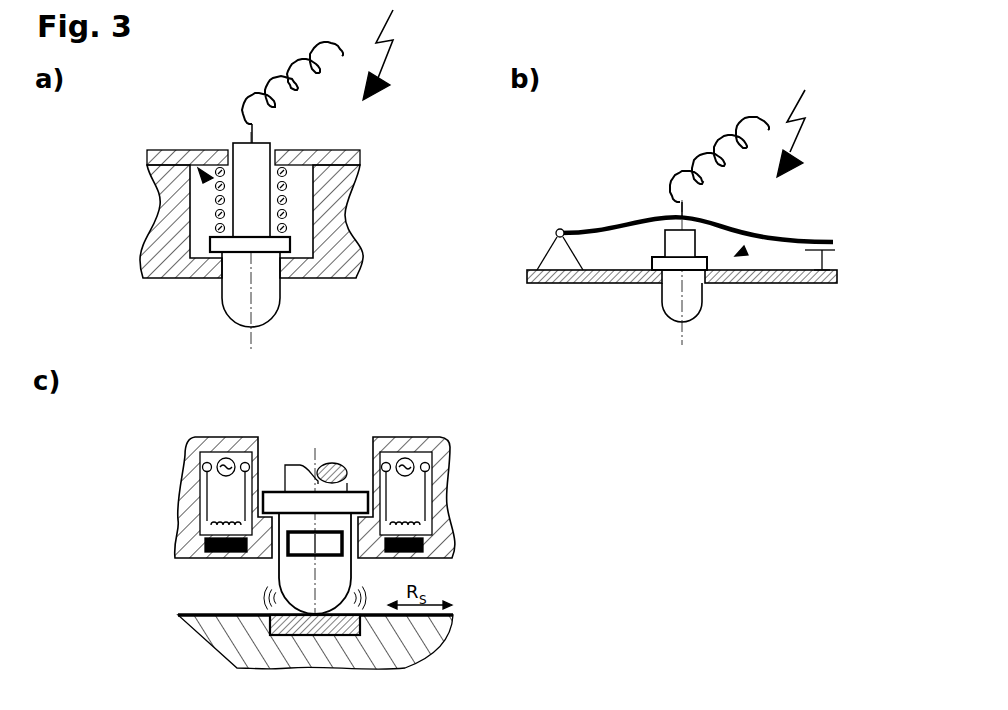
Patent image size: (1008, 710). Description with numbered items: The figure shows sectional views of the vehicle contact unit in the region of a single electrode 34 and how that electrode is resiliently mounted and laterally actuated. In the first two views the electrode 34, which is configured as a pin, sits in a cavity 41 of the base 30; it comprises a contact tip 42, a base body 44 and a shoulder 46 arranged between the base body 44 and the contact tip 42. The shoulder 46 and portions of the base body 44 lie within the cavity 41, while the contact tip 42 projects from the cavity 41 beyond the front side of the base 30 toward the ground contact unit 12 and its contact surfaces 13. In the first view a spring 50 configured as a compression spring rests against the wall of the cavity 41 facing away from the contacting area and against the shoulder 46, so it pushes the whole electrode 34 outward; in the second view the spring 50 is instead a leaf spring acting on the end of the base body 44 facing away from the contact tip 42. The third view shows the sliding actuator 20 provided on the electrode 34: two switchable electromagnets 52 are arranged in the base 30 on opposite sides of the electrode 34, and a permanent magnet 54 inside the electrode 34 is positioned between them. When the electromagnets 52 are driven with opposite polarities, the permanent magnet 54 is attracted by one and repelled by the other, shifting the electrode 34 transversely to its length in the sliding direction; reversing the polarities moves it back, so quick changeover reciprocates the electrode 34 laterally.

In FIG. 3c, the ground contact unit 12 is at (364, 646).
In FIG. 3c, the contact surfaces 13 is at (325, 656).
In FIG. 3c, the sliding actuator 20 is at (321, 500).
In FIG. 3a, the base 30 is at (297, 219).
In FIG. 3b, the base 30 is at (682, 314).
In FIG. 3c, the base 30 is at (362, 497).
In FIG. 3a, the electrode 34 is at (338, 293).
In FIG. 3b, the electrode 34 is at (811, 231).
In FIG. 3c, the electrode 34 is at (230, 540).
In FIG. 3a, the cavity 41 is at (201, 127).
In FIG. 3a, the contact tip 42 is at (338, 335).
In FIG. 3b, the contact tip 42 is at (724, 320).
In FIG. 3a, the base body 44 is at (344, 174).
In FIG. 3b, the base body 44 is at (743, 222).
In FIG. 3a, the shoulder 46 is at (166, 234).
In FIG. 3b, the shoulder 46 is at (772, 307).
In FIG. 3a, the spring 50 is at (164, 192).
In FIG. 3b, the spring 50 is at (679, 227).
In FIG. 3c, the electromagnets 52 is at (321, 515).
In FIG. 3c, the permanent magnet 54 is at (283, 469).